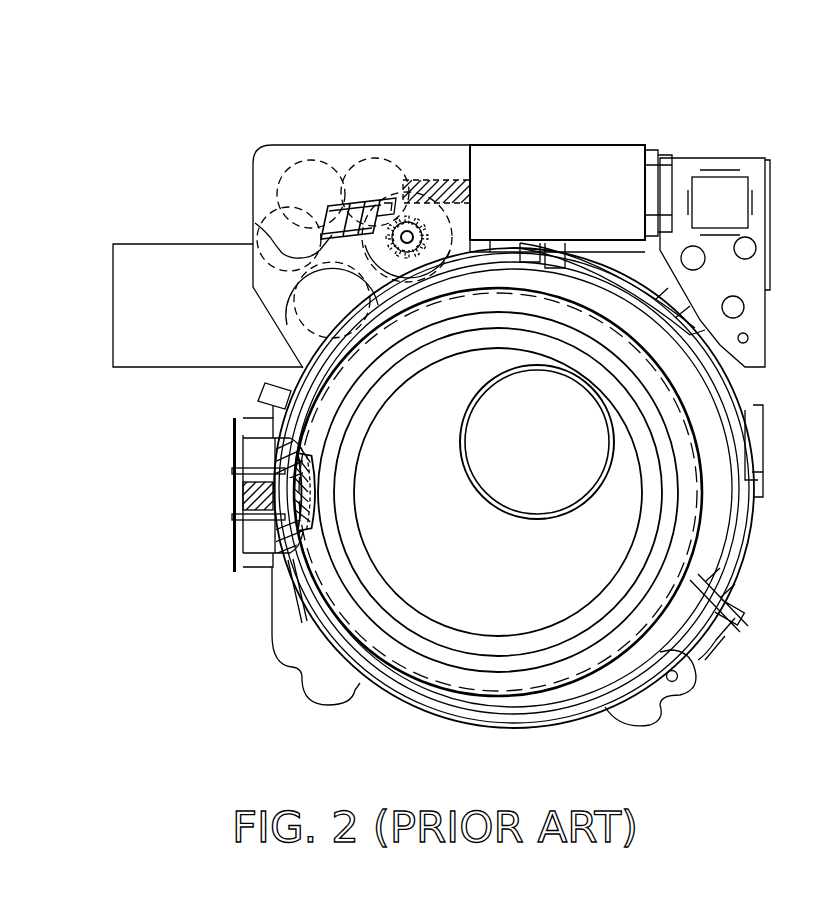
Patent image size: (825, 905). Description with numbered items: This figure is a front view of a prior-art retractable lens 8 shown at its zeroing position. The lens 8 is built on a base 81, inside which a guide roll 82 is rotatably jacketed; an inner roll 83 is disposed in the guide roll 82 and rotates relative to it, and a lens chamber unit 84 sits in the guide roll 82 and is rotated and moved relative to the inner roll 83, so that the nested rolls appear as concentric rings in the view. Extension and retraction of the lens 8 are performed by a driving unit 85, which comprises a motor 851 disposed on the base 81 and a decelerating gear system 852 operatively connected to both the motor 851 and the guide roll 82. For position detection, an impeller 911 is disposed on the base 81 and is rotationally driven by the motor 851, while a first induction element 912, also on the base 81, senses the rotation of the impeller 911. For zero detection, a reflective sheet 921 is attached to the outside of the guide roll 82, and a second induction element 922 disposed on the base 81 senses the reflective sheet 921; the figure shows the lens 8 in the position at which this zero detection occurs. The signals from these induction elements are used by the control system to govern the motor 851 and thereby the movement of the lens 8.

The lens 8 is at (438, 436).
The base 81 is at (745, 158).
The guide roll 82 is at (447, 680).
The inner roll 83 is at (508, 660).
The lens chamber unit 84 is at (568, 632).
The driving unit 85 is at (552, 186).
The motor 851 is at (608, 178).
The decelerating gear system 852 is at (380, 147).
The impeller 911 is at (420, 147).
The first induction element 912 is at (335, 146).
The reflective sheet 921 is at (236, 530).
The second induction element 922 is at (250, 494).